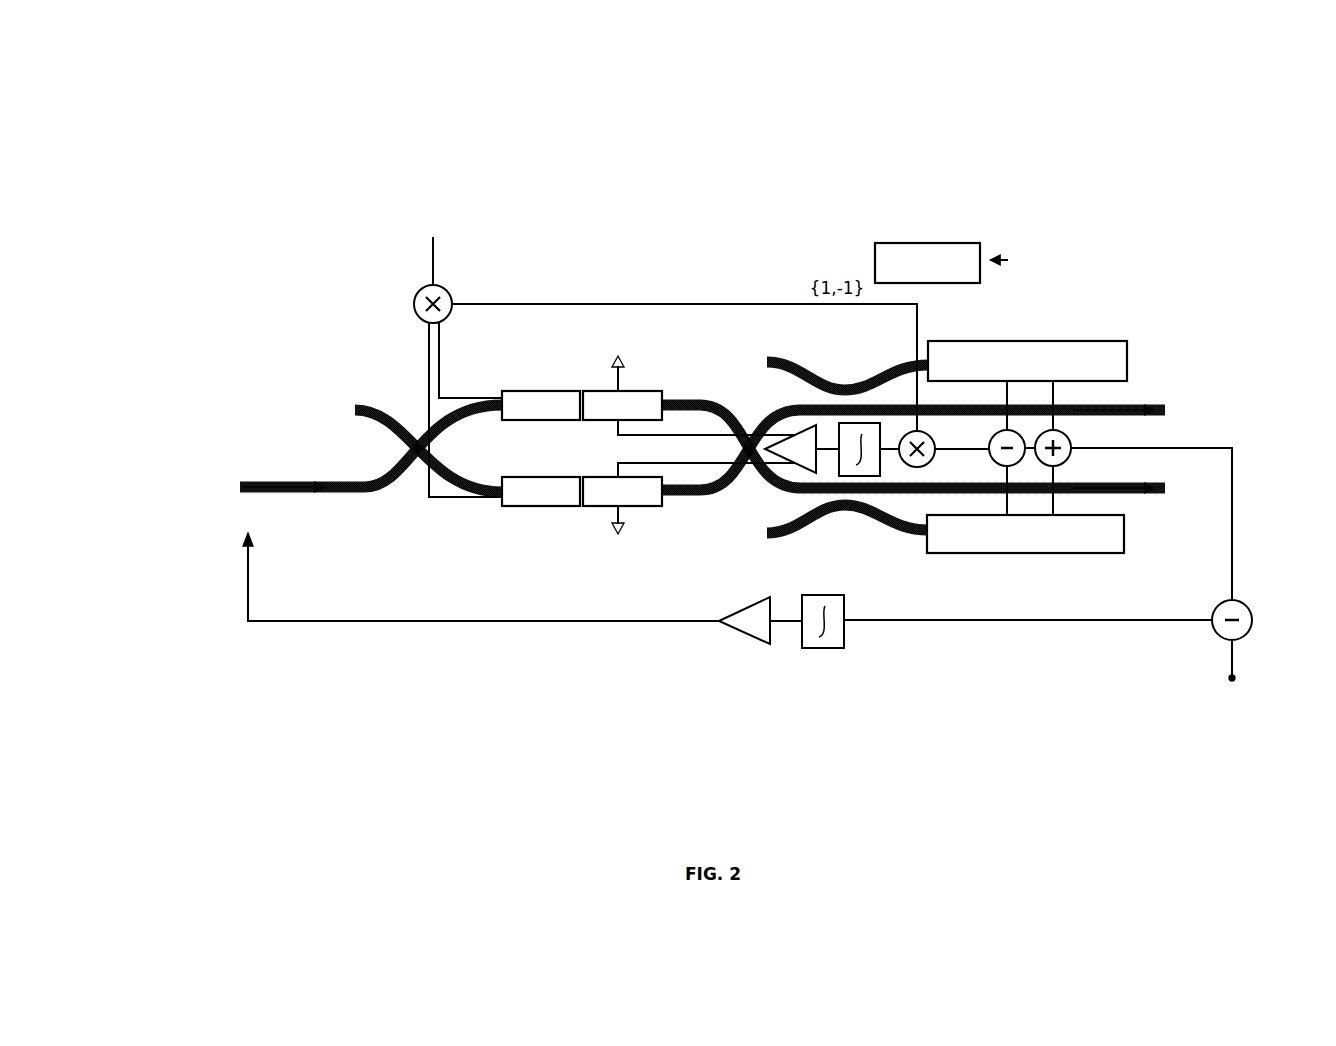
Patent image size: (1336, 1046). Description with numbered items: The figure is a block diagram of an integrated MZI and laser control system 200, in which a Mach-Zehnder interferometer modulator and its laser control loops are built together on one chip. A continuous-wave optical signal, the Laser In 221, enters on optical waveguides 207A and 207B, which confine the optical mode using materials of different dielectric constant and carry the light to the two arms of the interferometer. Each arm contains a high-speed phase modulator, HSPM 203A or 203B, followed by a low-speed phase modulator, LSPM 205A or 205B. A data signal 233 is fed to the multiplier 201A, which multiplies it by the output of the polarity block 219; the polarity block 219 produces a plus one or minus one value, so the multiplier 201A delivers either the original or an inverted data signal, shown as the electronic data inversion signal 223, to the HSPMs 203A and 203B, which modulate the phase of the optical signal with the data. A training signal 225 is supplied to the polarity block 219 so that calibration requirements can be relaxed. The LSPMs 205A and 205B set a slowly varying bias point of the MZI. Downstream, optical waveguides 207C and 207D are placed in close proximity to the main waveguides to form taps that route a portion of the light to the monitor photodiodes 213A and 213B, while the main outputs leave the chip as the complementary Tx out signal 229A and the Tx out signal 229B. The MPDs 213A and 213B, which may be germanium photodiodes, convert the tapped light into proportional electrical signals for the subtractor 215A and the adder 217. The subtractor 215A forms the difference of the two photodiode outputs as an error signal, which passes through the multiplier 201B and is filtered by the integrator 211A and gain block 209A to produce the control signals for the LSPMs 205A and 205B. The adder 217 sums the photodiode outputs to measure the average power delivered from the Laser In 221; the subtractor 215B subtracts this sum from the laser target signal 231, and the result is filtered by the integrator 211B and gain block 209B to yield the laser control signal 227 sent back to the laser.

The integrated MZI and laser control system 200 is at (340, 106).
The multiplier 201A is at (418, 292).
The multiplier 201B is at (938, 442).
The high-speed phase modulator 203A is at (545, 390).
The high-speed phase modulator 203B is at (545, 507).
The low-speed phase modulator 205A is at (650, 390).
The low-speed phase modulator 205B is at (650, 507).
The optical waveguide 207A is at (380, 406).
The optical waveguide 207B is at (395, 487).
The optical waveguide 207C is at (805, 366).
The optical waveguide 207D is at (805, 534).
The gain block 209A is at (795, 425).
The gain block 209B is at (740, 630).
The integrator 211A is at (860, 422).
The integrator 211B is at (826, 649).
The monitor photodiode 213A is at (1027, 361).
The monitor photodiode 213B is at (1025, 534).
The subtractor 215A is at (995, 460).
The subtractor 215B is at (1215, 634).
The adder 217 is at (1040, 432).
The polarity block 219 is at (875, 258).
The Laser In 221 is at (371, 446).
The electronic data inversion signal 223 is at (684, 349).
The training signal 225 is at (1059, 260).
The laser control signal 227 is at (481, 575).
The complementary Tx out signal 229A is at (1163, 422).
The Tx out signal 229B is at (1136, 472).
The laser target signal 231 is at (1233, 685).
The data signal 233 is at (430, 246).